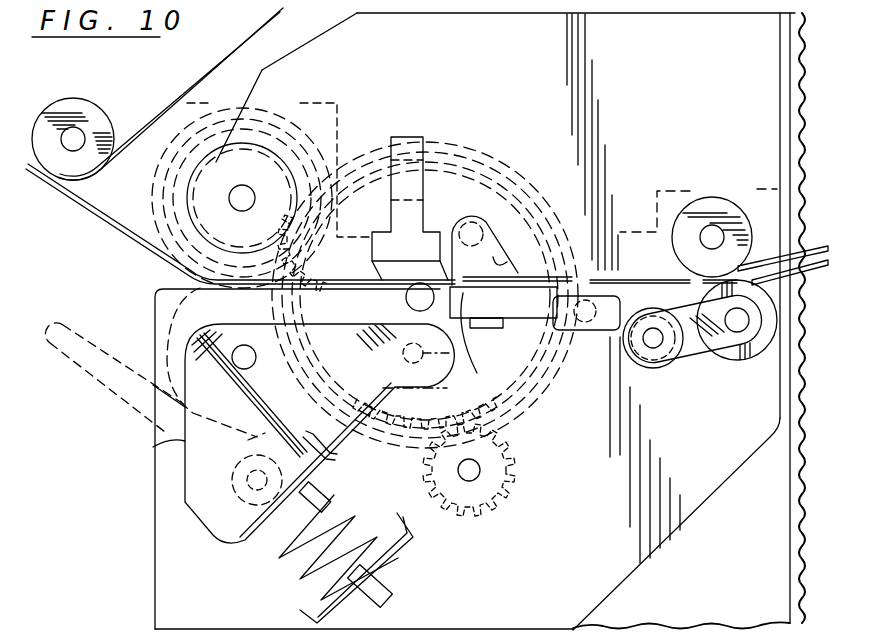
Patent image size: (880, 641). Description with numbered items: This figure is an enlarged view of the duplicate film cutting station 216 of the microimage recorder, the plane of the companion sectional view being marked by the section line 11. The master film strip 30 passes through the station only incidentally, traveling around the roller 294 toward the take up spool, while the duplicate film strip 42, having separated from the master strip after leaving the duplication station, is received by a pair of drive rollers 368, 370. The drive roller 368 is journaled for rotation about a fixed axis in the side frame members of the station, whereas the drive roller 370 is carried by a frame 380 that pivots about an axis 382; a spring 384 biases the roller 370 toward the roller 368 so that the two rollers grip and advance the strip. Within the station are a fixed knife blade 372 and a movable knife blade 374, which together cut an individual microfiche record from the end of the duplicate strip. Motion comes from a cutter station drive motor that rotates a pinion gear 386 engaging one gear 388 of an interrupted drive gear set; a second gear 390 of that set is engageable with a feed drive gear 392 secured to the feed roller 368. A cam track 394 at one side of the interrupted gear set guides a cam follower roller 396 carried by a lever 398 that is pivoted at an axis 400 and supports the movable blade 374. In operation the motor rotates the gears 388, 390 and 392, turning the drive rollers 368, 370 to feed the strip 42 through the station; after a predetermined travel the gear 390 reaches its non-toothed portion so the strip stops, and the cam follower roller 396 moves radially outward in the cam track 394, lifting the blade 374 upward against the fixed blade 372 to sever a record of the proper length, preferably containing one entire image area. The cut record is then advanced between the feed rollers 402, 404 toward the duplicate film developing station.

The section line 11- 11 is at (150, 165).
The master film strip 30 is at (272, 18).
The duplicate film strip 42 is at (96, 212).
The cutting station 216 is at (97, 412).
The roller 294 is at (90, 106).
The drive roller 368 is at (275, 112).
The drive roller 370 is at (172, 313).
The fixed knife blade 372 is at (427, 268).
The movable knife blade 374 is at (440, 389).
The frame 380 is at (153, 447).
The axis 382 is at (405, 352).
The spring 384 is at (290, 560).
The pinion gear 386 is at (498, 497).
The gear 388 is at (500, 417).
The second gear 390 is at (345, 150).
The feed drive gear 392 is at (328, 134).
The cam track 394 is at (512, 234).
The cam follower roller 396 is at (510, 193).
The lever 398 is at (483, 333).
The axis 400 is at (594, 330).
The feed roller 402 is at (718, 197).
The feed roller 404 is at (750, 352).